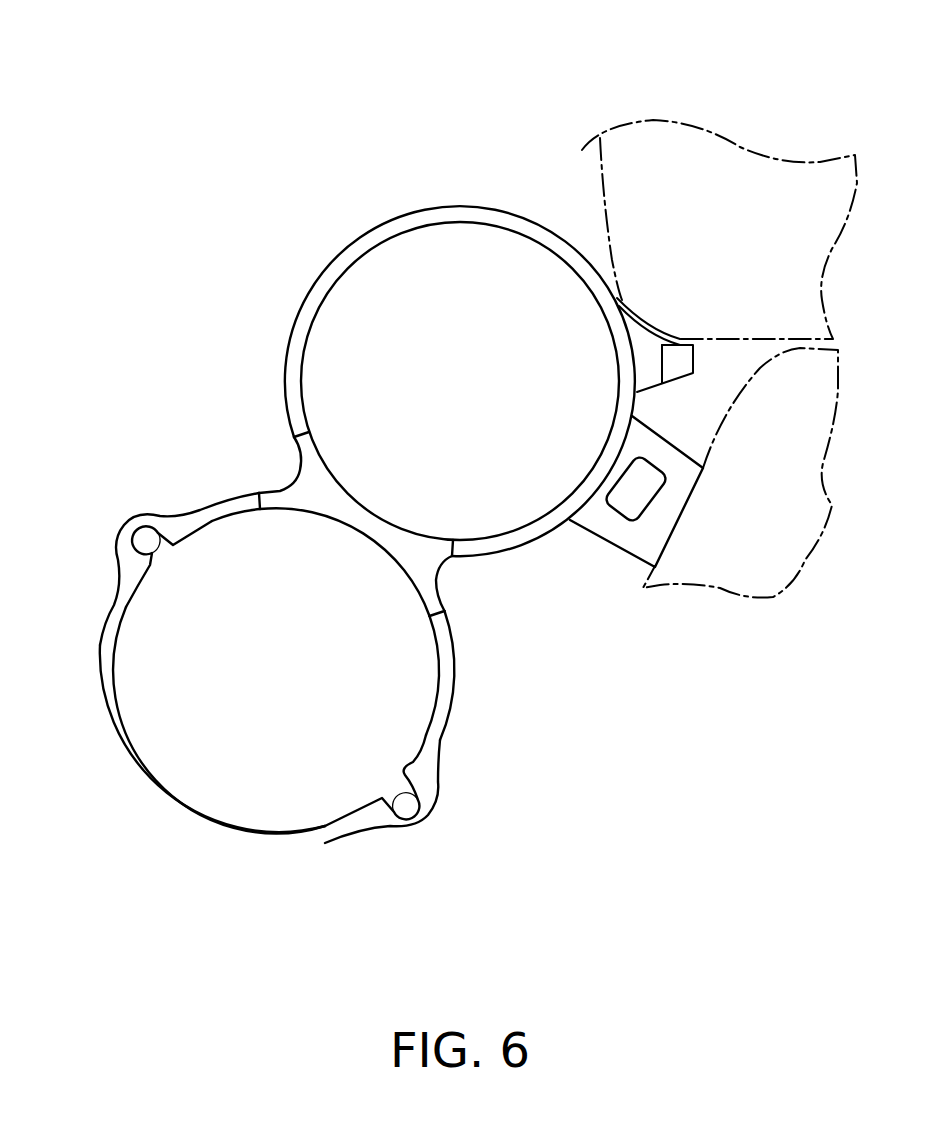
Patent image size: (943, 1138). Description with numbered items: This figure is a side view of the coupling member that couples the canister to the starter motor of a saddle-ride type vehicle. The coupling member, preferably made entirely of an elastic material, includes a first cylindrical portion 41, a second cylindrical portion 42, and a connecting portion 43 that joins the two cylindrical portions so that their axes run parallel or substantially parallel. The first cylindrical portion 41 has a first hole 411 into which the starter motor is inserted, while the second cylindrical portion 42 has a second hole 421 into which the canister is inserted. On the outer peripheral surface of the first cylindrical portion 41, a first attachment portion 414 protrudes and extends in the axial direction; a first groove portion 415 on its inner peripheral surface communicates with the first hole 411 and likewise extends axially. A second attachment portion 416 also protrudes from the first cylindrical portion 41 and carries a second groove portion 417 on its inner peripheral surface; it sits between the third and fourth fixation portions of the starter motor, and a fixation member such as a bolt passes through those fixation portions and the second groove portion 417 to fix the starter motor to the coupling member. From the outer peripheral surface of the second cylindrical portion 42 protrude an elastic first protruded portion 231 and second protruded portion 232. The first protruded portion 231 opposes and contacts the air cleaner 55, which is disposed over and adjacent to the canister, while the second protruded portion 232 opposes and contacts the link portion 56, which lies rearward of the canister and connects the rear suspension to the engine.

The first cylindrical portion 41 is at (288, 681).
The first hole 411 is at (180, 778).
The first attachment portion 414 is at (125, 521).
The first groove portion 415 is at (158, 538).
The second attachment portion 416 is at (428, 823).
The second groove portion 417 is at (392, 815).
The second cylindrical portion 42 is at (449, 305).
The second hole 421 is at (392, 240).
The connecting portion 43 is at (298, 480).
The air cleaner 55 is at (600, 193).
The link portion 56 is at (737, 392).
The first protruded portion 231 is at (678, 338).
The second protruded portion 232 is at (634, 552).